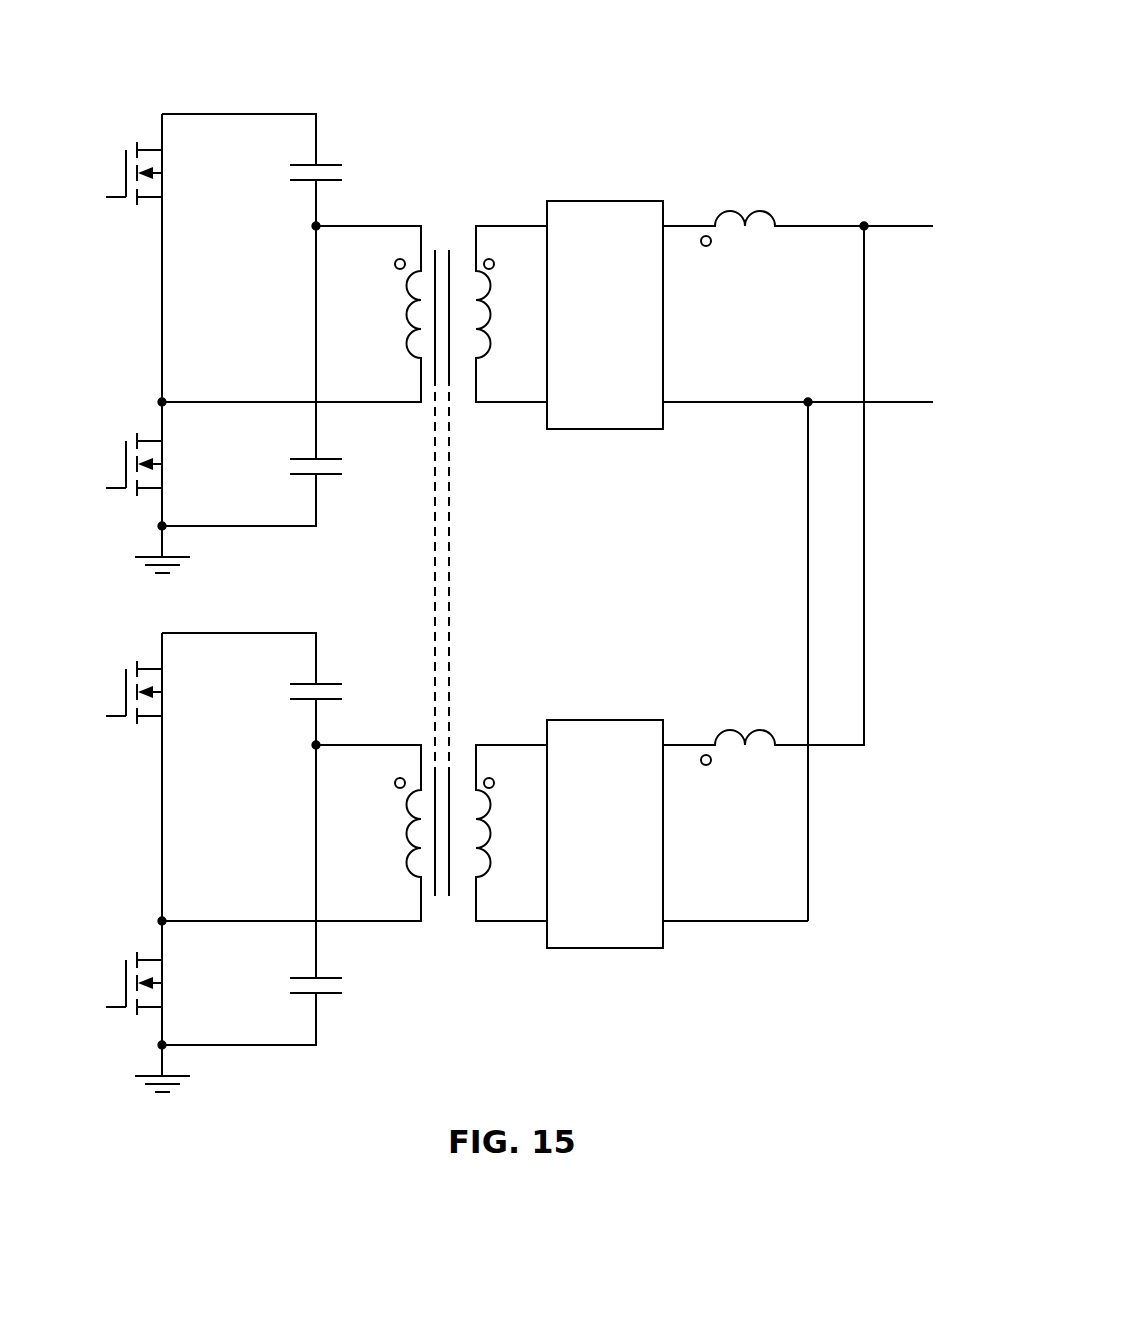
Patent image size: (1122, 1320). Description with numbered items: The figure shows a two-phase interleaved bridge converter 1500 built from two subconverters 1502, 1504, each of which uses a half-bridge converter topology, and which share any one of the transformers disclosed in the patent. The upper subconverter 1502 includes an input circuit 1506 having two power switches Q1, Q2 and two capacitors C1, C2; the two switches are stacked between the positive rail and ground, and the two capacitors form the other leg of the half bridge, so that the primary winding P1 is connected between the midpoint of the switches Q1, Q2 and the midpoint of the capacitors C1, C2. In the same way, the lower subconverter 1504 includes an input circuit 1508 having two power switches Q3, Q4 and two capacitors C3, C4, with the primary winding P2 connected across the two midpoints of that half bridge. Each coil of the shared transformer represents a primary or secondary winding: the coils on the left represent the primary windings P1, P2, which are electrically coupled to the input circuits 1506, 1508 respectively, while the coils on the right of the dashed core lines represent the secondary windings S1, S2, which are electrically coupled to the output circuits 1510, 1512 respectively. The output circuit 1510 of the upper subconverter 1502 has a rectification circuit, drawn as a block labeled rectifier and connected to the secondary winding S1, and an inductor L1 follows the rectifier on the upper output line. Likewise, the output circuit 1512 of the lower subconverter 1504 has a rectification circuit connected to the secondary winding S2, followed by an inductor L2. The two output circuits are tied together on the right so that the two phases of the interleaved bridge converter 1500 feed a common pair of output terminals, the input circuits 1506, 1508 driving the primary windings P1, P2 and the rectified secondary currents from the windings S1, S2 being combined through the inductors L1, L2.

The two-phase interleaved bridge converter 1500 is at (806, 53).
The subconverter 1502 is at (470, 175).
The subconverter 1504 is at (498, 689).
The input circuit 1506 is at (119, 295).
The input circuit 1508 is at (118, 818).
The output circuit 1510 is at (693, 317).
The output circuit 1512 is at (689, 838).
The power switch Q1 is at (110, 173).
The power switch Q2 is at (110, 464).
The power switch Q3 is at (110, 692).
The power switch Q4 is at (110, 983).
The capacitor C1 is at (341, 174).
The capacitor C2 is at (341, 468).
The capacitor C3 is at (341, 693).
The capacitor C4 is at (341, 987).
The primary winding P1 is at (368, 314).
The primary winding P2 is at (368, 833).
The secondary winding S1 is at (511, 314).
The secondary winding S2 is at (511, 833).
The inductor L1 is at (798, 209).
The inductor L2 is at (763, 726).